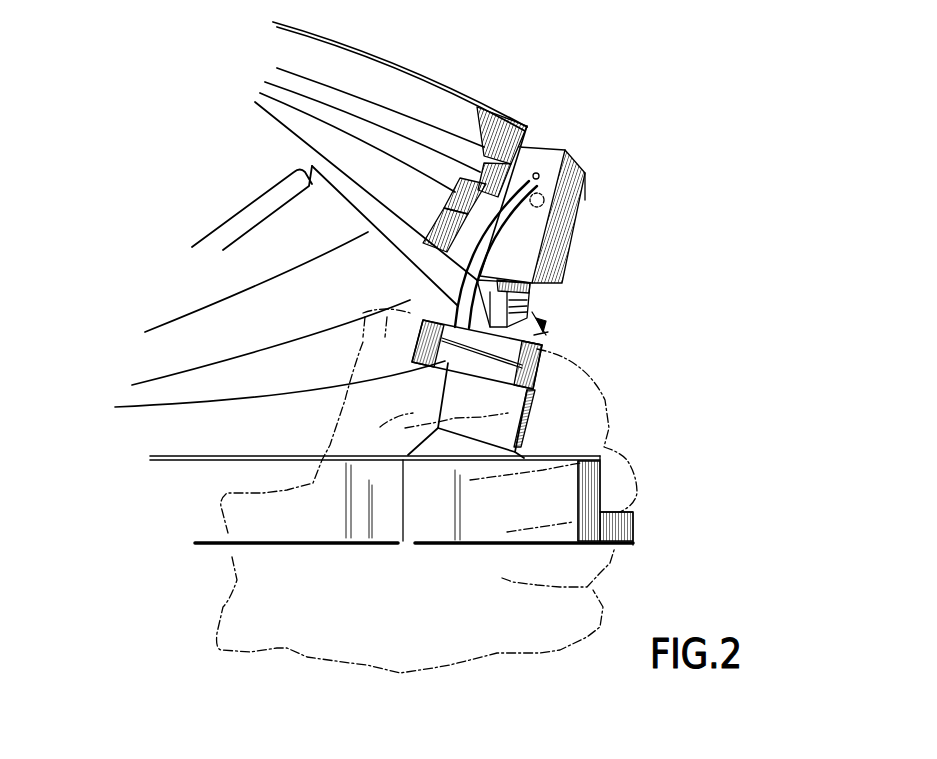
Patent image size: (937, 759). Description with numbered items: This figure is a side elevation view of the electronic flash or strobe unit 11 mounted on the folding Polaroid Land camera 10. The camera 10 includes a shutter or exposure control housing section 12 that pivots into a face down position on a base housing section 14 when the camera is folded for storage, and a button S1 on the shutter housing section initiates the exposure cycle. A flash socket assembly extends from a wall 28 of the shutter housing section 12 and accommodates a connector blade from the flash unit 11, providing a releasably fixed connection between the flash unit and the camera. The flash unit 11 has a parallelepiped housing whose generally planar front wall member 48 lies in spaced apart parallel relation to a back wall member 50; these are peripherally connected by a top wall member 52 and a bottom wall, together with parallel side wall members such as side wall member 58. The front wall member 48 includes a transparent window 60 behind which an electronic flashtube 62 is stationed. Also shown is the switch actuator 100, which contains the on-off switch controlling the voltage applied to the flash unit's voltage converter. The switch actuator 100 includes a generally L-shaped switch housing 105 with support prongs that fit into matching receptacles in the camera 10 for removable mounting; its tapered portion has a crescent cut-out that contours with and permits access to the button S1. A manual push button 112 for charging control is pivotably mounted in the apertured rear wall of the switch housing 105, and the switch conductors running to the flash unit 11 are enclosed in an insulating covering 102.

The camera 10 is at (637, 350).
The electronic flash or strobe unit 11 is at (562, 186).
The shutter or exposure control housing section 12 is at (446, 392).
The base housing section 14 is at (638, 528).
The wall 28 is at (531, 293).
The front wall member 48 is at (563, 253).
The back wall member 50 is at (508, 177).
The top wall member 52 is at (552, 145).
The side wall member 58 is at (529, 258).
The transparent window 60 is at (580, 217).
The electronic flashtube 62 is at (545, 197).
The switch actuator 100 is at (527, 353).
The insulating covering 102 is at (468, 263).
The switch housing 105 is at (480, 350).
The manual push button 112 is at (424, 330).
The button S1 is at (538, 377).